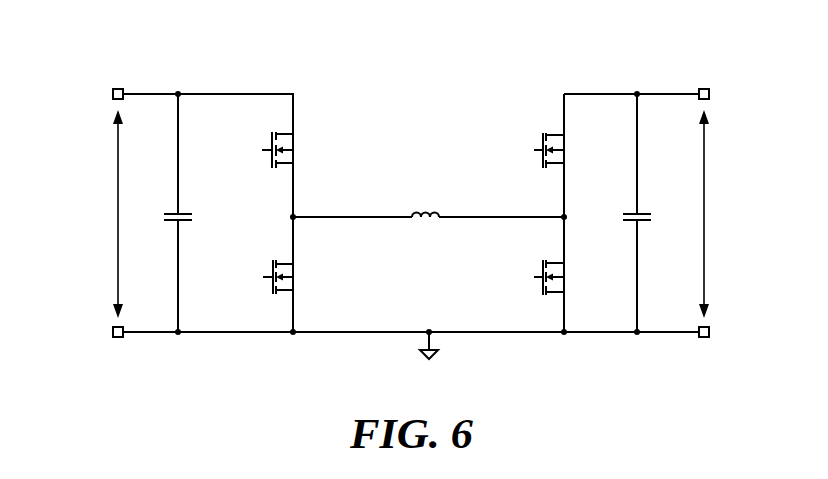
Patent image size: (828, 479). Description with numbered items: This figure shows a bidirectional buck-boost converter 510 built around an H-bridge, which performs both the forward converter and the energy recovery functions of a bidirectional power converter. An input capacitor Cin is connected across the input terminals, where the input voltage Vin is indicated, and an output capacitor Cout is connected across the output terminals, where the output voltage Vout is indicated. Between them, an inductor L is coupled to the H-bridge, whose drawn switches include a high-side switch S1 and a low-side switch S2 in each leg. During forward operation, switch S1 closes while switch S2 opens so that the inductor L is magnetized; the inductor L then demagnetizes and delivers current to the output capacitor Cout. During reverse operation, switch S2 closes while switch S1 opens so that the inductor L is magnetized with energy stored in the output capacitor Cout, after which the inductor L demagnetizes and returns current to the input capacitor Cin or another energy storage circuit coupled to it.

The bidirectional buck-boost converter 510 is at (65, 85).
The switch S1 is at (398, 138).
The switch S2 is at (398, 267).
The inductor L is at (428, 194).
The input capacitor Cin is at (166, 213).
The output capacitor Cout is at (657, 213).
The input voltage Vin is at (101, 214).
The output voltage Vout is at (729, 214).